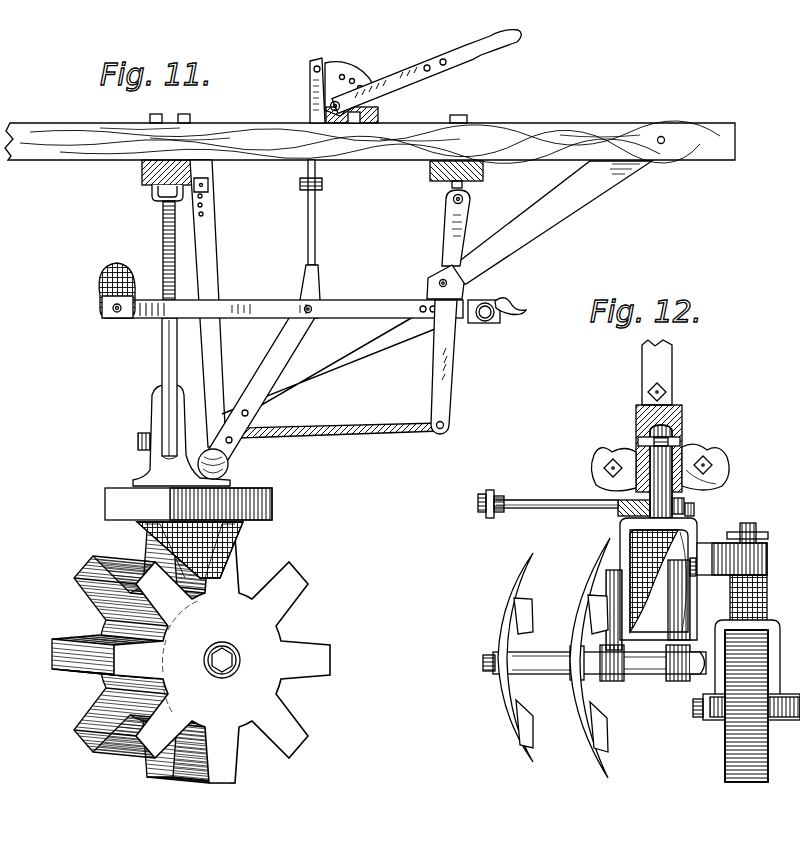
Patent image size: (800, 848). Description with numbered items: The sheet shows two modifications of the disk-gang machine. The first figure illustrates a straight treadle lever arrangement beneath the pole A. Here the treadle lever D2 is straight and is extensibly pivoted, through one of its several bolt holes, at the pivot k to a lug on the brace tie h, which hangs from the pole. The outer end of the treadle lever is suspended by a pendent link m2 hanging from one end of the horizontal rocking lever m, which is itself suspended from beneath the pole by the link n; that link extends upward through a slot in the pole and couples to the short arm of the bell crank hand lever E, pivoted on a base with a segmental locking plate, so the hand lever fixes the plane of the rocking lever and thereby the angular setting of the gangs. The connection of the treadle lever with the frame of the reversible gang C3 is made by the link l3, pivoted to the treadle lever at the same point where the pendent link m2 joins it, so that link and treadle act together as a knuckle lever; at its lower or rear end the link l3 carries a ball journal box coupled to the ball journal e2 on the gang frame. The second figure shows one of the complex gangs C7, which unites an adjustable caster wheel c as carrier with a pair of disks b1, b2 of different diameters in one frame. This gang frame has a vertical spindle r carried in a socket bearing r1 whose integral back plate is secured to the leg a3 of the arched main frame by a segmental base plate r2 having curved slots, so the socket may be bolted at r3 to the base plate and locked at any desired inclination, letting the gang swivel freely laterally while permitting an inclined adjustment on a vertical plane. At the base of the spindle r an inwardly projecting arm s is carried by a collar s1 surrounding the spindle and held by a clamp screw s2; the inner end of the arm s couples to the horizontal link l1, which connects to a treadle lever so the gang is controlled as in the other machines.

In FIG. 11, the pole A is at (370, 138).
In FIG. 11, the bell crank hand lever E is at (423, 76).
In FIG. 11, the link n is at (310, 115).
In FIG. 11, the rocking lever m is at (316, 188).
In FIG. 11, the pendent link m2 is at (313, 252).
In FIG. 11, the straight treadle lever D2 is at (312, 293).
In FIG. 11, the brace tie h is at (544, 222).
In FIG. 11, the pivot k is at (452, 320).
In FIG. 11, the link l3 is at (273, 365).
In FIG. 11, the ball journal e2 is at (229, 481).
In FIG. 11, the reversible gang C3 is at (182, 657).
In FIG. 12, the leg of arched frame a3 is at (657, 372).
In FIG. 12, the socket bearing r1 is at (682, 426).
In FIG. 12, the segmental base plate r2 is at (627, 450).
In FIG. 12, the bolts r3 is at (721, 483).
In FIG. 12, the vertical spindle r is at (653, 492).
In FIG. 12, the collar s1 is at (684, 501).
In FIG. 12, the clamp screw s2 is at (695, 509).
In FIG. 12, the inwardly projecting lever or arm s is at (555, 497).
In FIG. 12, the horizontal link or rod l1 is at (488, 503).
In FIG. 12, the disk b2 is at (521, 657).
In FIG. 12, the disk b1 is at (596, 658).
In FIG. 12, the complex gang C7 is at (635, 792).
In FIG. 12, the adjustable caster wheel c is at (746, 652).